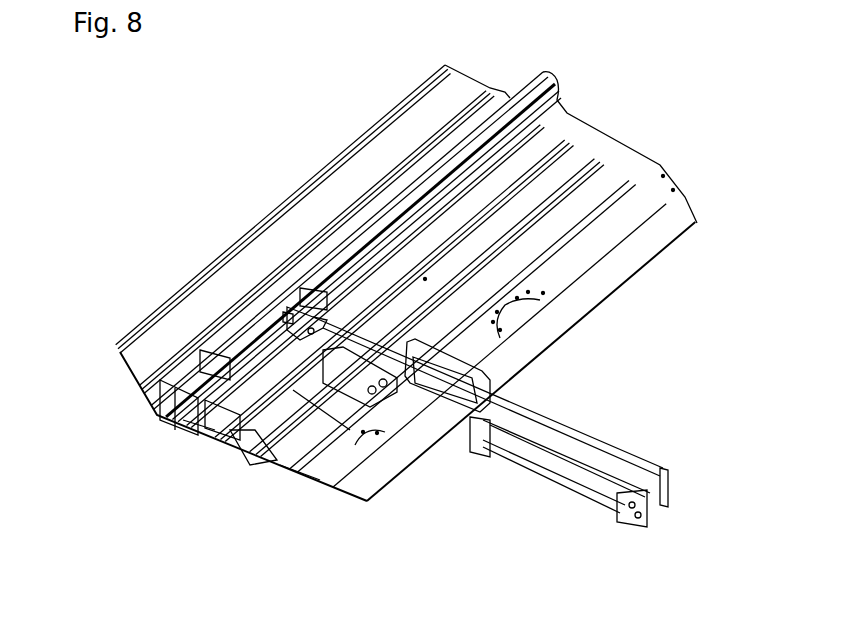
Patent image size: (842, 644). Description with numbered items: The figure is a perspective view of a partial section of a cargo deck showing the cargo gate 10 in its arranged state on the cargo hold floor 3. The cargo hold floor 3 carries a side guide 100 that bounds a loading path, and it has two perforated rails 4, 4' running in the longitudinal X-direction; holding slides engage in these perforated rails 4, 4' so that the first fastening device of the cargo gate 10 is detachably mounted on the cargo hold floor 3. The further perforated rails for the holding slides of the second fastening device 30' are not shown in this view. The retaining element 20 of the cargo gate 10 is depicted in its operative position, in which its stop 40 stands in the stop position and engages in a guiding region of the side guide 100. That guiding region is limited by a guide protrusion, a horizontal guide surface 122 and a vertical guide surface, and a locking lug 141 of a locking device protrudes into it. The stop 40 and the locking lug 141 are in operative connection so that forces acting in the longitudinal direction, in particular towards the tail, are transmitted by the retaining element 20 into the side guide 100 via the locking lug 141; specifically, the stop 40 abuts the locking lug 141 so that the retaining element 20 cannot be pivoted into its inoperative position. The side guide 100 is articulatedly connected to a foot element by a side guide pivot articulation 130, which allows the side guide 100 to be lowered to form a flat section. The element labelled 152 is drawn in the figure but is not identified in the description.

The side guide 100 is at (532, 97).
The cargo gate 10 is at (605, 433).
The retaining element 20 is at (533, 430).
The second fastening device 30' is at (402, 479).
The locking lug 141 is at (322, 300).
The stop 40 is at (287, 317).
The stop element 152 is at (240, 348).
The horizontal guide surface 122 is at (227, 376).
The side guide pivot articulation 130 is at (177, 418).
The cargo hold floor 3 is at (185, 422).
The perforated rail 4 is at (233, 492).
The perforated rail 4' is at (292, 480).